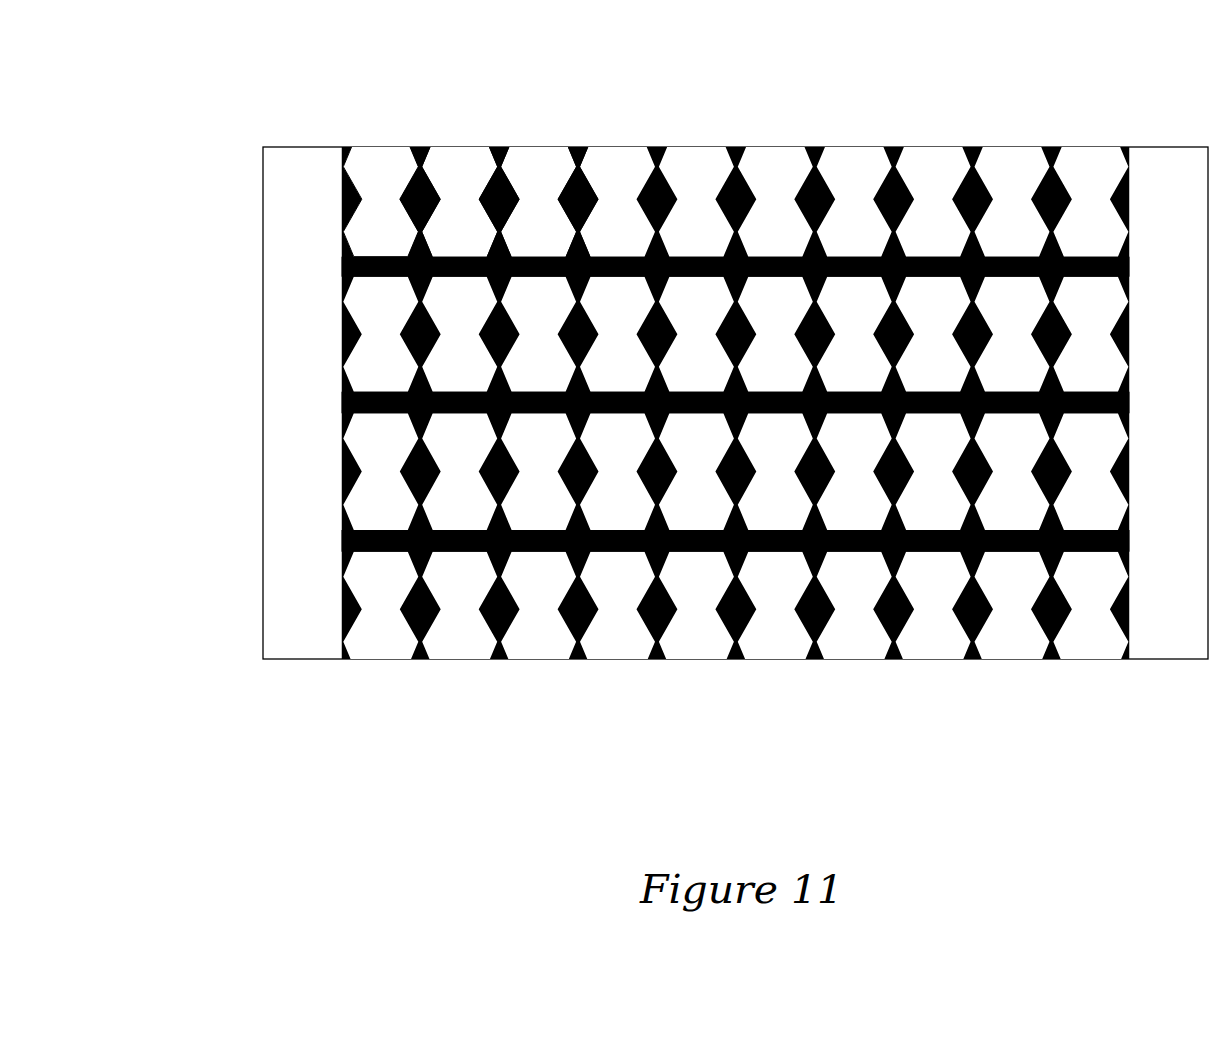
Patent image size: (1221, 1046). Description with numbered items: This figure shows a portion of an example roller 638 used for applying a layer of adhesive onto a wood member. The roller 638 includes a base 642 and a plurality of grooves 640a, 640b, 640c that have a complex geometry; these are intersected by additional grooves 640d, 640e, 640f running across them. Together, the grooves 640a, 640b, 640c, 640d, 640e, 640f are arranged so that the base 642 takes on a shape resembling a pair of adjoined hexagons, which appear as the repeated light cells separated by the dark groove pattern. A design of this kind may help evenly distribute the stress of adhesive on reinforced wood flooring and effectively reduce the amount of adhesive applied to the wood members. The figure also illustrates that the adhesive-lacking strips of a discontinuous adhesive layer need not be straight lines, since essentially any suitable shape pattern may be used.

The roller 638 is at (243, 95).
The base 642 is at (382, 163).
The groove 640a is at (430, 181).
The groove 640b is at (515, 181).
The groove 640c is at (590, 181).
The groove 640d is at (342, 268).
The groove 640e is at (342, 403).
The groove 640f is at (342, 540).